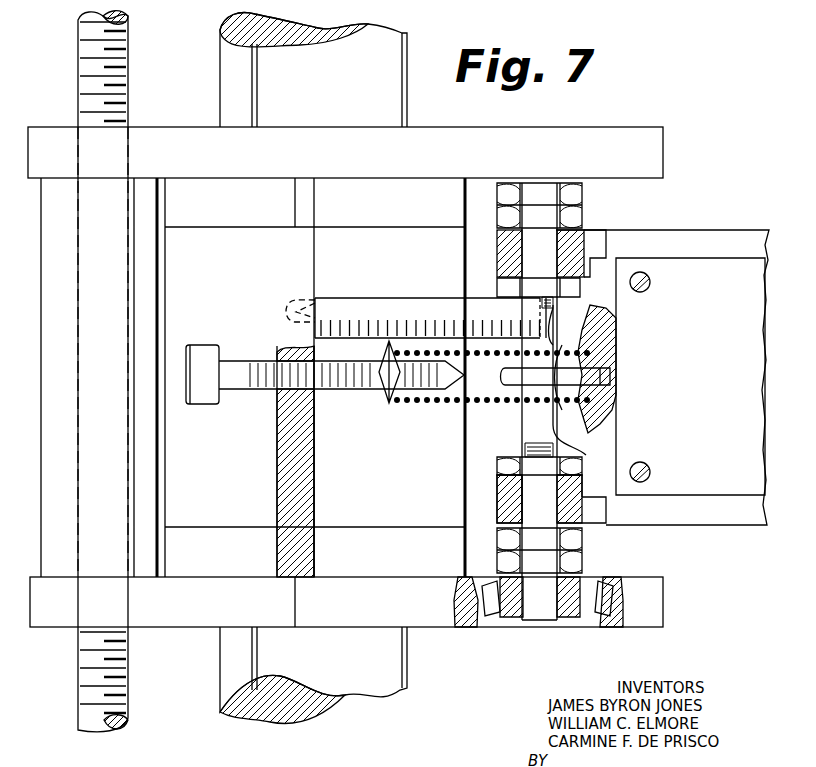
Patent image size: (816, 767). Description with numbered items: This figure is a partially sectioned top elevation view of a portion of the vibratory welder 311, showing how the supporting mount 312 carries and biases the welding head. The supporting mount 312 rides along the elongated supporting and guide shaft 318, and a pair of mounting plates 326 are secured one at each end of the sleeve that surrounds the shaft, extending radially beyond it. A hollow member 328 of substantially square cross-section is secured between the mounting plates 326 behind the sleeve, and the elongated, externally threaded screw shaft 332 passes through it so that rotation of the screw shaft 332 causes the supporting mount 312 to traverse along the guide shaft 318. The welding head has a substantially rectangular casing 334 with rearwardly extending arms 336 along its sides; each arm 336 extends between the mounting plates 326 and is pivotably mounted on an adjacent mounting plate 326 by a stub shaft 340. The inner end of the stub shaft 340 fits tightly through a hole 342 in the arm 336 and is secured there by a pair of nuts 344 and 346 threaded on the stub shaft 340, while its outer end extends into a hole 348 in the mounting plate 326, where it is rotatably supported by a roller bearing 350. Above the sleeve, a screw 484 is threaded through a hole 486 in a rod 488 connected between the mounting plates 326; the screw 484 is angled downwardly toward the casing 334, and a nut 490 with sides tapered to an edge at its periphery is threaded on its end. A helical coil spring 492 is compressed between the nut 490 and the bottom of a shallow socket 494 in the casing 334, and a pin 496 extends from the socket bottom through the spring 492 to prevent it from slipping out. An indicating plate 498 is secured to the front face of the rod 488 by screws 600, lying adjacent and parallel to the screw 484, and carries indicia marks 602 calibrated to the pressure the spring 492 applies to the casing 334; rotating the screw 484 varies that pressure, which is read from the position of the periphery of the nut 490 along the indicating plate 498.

The vibratory welder 311 is at (701, 547).
The supporting mount 312 is at (435, 622).
The supporting and guide shaft 318 is at (366, 688).
The mounting plates 326 is at (183, 134).
The hollow member 328 is at (67, 562).
The screw shaft 332 is at (130, 722).
The casing 334 is at (733, 515).
The arms 336 is at (572, 232).
The stub shaft 340 is at (530, 506).
The hole 342 is at (497, 480).
The nut 344 is at (505, 456).
The nut 346 is at (575, 545).
The hole 348 is at (580, 625).
The roller bearing 350 is at (490, 625).
The screw 484 is at (343, 390).
The hole 486 is at (280, 400).
The rod 488 is at (277, 473).
The nut 490 is at (389, 405).
The helical coil spring 492 is at (436, 404).
The socket 494 is at (580, 410).
The pin 496 is at (600, 378).
The indicating plate 498 is at (373, 298).
The screws 600 is at (300, 306).
The indicia marks 602 is at (453, 328).